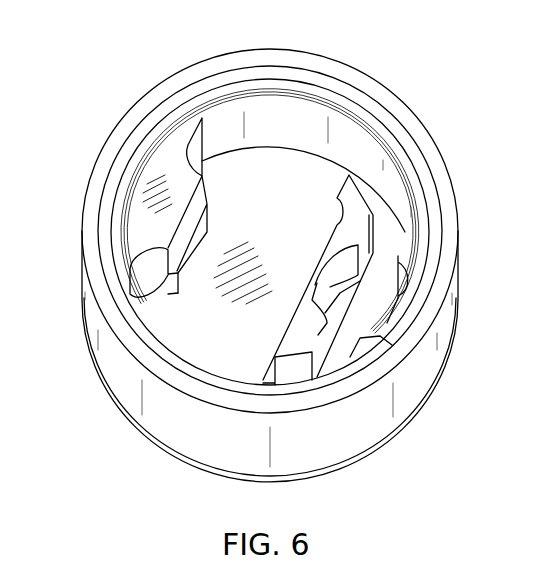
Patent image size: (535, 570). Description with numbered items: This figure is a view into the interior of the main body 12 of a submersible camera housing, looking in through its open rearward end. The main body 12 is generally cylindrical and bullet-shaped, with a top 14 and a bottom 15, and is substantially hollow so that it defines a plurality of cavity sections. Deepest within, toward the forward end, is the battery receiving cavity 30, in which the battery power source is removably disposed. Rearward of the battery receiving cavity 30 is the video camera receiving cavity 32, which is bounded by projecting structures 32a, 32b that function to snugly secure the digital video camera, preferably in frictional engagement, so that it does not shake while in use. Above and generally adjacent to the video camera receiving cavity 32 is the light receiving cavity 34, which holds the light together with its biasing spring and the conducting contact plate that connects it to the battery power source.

The main body 12 is at (343, 417).
The top 14 is at (85, 187).
The bottom 15 is at (172, 453).
The battery receiving cavity 30 is at (226, 205).
The video camera receiving cavity 32 is at (210, 323).
The projecting structure 32a is at (165, 170).
The projecting structure 32b is at (353, 193).
The light receiving cavity 34 is at (338, 295).